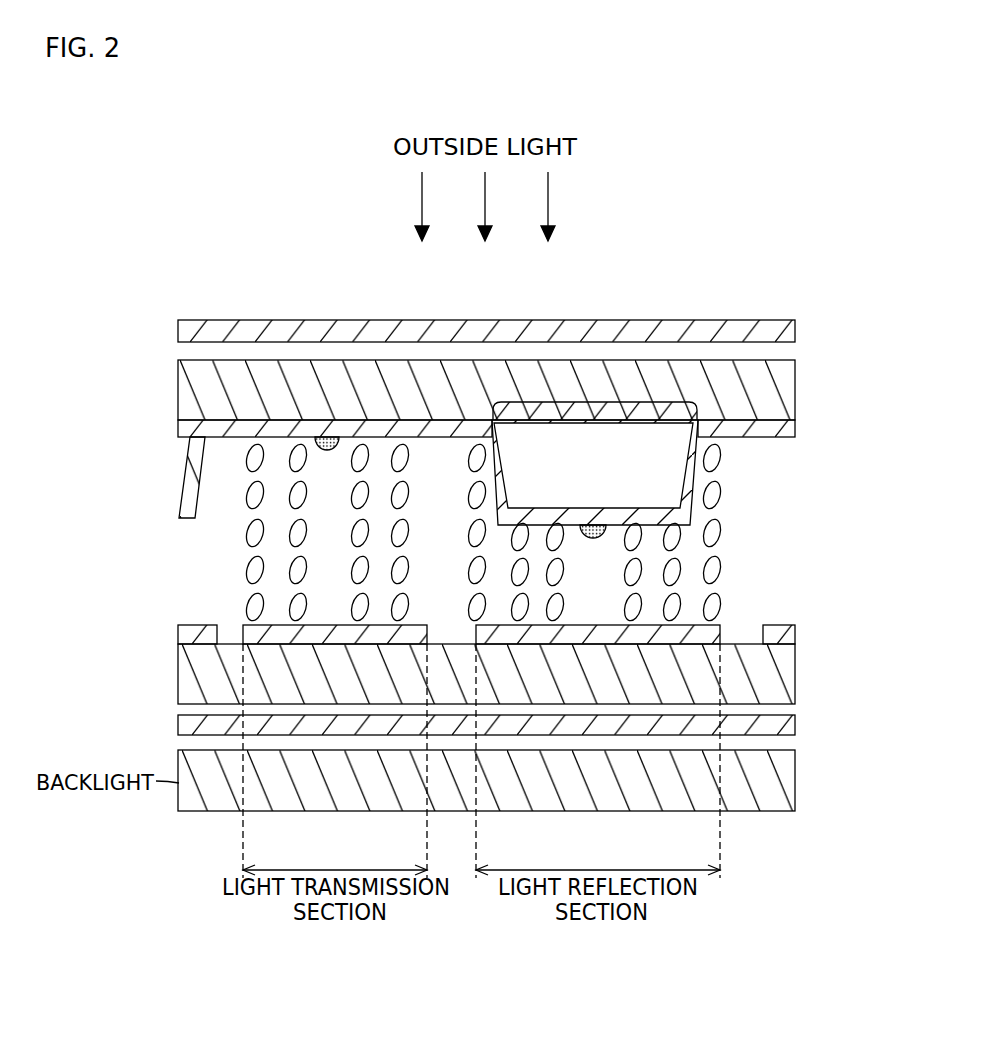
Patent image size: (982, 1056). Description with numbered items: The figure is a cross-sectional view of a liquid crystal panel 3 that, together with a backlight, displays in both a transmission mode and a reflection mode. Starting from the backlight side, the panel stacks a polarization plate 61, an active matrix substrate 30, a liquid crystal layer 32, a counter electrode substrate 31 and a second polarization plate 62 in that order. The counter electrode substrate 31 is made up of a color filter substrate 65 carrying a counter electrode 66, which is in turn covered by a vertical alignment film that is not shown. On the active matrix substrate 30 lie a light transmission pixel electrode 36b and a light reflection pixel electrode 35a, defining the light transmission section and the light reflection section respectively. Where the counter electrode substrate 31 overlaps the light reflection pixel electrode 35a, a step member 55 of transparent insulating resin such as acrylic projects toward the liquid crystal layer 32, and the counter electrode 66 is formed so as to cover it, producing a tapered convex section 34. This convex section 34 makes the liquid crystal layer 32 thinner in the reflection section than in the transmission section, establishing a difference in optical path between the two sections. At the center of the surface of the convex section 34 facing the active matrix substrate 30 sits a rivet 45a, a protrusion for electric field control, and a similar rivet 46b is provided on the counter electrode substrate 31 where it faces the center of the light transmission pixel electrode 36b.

The liquid crystal panel 3 is at (511, 529).
The polarization plate 62 is at (797, 334).
The color filter substrate 65 is at (797, 388).
The counter electrode 66 is at (510, 406).
The counter electrode substrate 31 is at (484, 439).
The convex section 34 is at (604, 403).
The step member 55 is at (584, 480).
The rivet 46b is at (327, 452).
The rivet 45a is at (593, 549).
The liquid crystal layer 32 is at (730, 446).
The light transmission pixel electrode 36b is at (243, 626).
The light reflection pixel electrode 35a is at (476, 626).
The active matrix substrate 30 is at (460, 642).
The polarization plate 61 is at (510, 727).